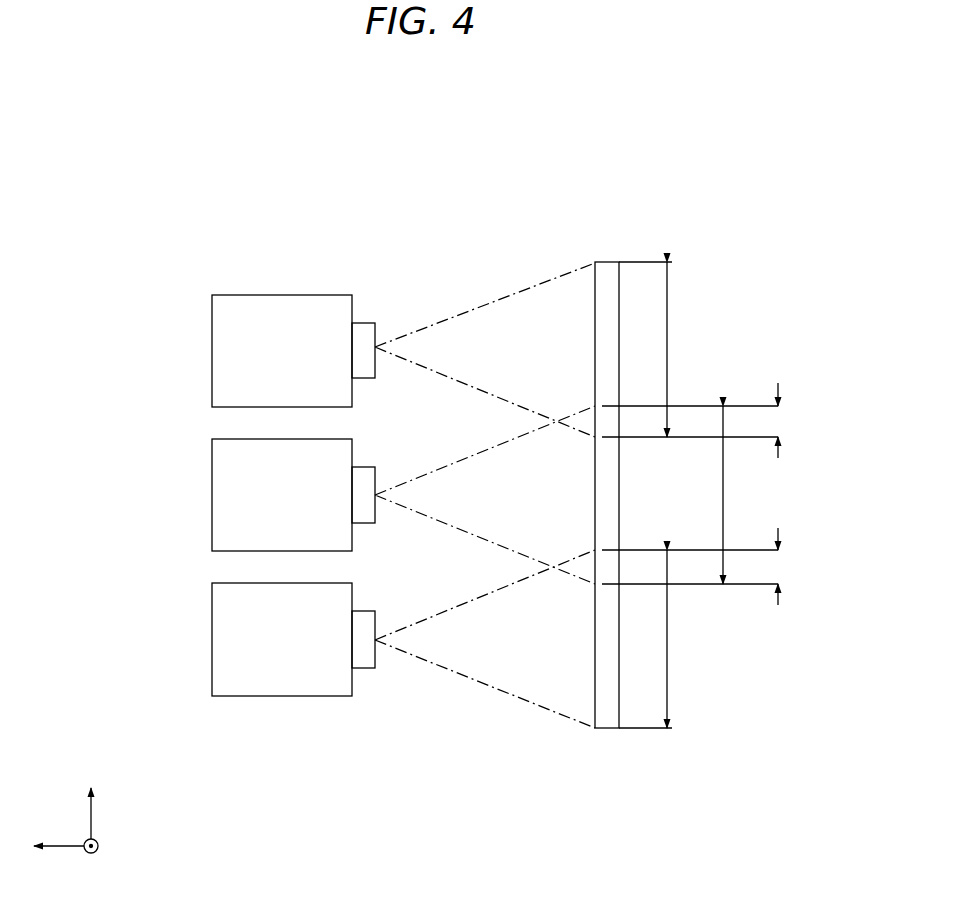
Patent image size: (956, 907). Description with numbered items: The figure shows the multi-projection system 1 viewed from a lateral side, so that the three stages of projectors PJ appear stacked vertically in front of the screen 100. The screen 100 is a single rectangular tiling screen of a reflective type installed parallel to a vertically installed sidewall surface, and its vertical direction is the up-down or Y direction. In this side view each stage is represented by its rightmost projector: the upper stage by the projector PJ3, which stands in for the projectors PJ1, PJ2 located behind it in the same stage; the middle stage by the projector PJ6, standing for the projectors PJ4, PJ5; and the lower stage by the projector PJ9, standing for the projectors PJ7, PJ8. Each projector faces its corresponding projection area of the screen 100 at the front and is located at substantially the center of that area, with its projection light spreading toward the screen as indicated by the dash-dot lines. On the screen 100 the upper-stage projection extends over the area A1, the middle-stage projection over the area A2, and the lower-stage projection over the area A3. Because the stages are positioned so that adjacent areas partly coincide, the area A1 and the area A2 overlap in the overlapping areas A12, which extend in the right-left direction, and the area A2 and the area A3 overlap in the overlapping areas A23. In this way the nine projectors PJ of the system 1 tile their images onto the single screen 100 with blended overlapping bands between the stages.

The multi-projection system 1 is at (151, 136).
The projectors PJ is at (178, 268).
The projector PJ1 is at (346, 350).
The projector PJ2 is at (218, 353).
The projector PJ3 is at (346, 350).
The projector PJ4 is at (346, 495).
The projector PJ5 is at (218, 497).
The projector PJ6 is at (346, 495).
The projector PJ7 is at (346, 639).
The projector PJ8 is at (218, 642).
The projector PJ9 is at (346, 639).
The screen 100 is at (602, 262).
The upper-stage projection area A1 is at (690, 349).
The middle-stage projection area A2 is at (690, 495).
The lower-stage projection area A3 is at (690, 639).
The overlapping areas A12 is at (807, 420).
The overlapping areas A23 is at (807, 566).